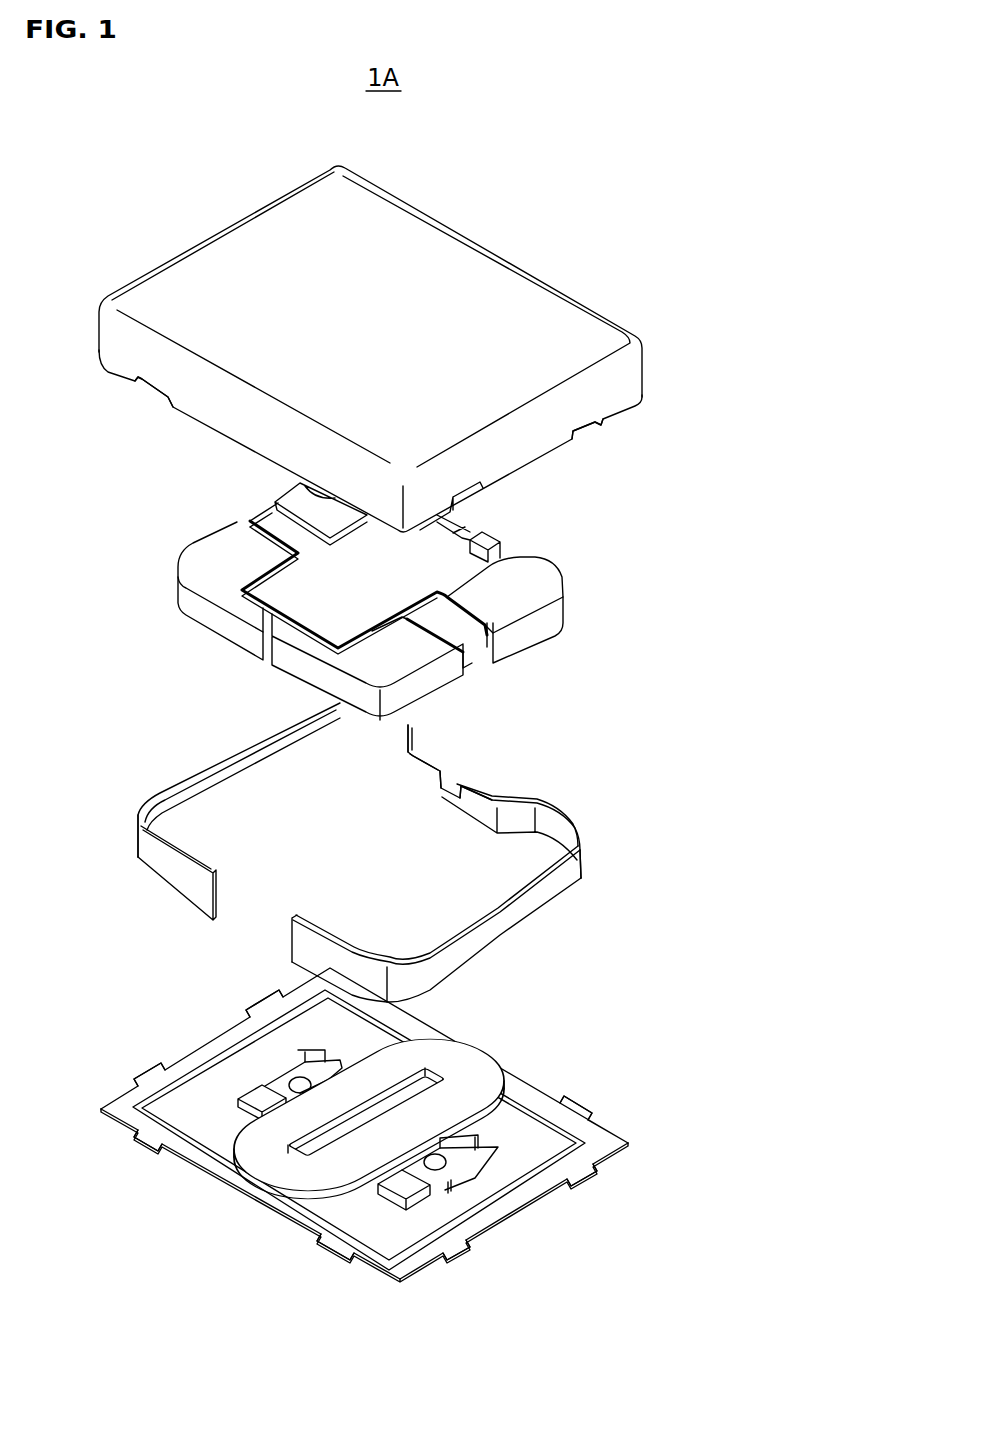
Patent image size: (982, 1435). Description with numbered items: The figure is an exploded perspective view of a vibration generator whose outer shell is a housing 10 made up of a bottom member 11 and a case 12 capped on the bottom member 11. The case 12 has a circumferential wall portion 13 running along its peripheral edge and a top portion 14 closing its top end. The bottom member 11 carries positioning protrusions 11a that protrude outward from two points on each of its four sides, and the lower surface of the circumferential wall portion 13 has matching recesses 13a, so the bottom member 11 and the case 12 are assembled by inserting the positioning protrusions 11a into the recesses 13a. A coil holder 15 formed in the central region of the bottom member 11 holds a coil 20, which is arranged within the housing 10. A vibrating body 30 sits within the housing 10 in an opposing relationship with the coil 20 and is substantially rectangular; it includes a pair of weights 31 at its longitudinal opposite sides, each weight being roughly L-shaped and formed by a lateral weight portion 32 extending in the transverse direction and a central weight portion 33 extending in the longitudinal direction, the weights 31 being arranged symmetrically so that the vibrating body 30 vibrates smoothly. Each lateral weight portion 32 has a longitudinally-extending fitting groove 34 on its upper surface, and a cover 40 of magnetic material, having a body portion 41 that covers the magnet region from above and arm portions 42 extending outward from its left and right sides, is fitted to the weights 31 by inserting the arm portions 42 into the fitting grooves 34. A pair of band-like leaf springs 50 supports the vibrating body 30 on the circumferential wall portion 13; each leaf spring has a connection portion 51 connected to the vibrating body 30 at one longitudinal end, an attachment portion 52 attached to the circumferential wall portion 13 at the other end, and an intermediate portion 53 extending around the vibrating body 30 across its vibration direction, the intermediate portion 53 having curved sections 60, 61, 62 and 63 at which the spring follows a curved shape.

The housing 10 is at (370, 708).
The bottom member 11 is at (508, 1222).
The positioning protrusions 11a is at (144, 1064).
The case 12 is at (430, 225).
The circumferential wall portion 13 is at (207, 418).
The recesses 13a is at (148, 388).
The top portion 14 is at (246, 257).
The coil holder 15 is at (490, 1143).
The coil 20 is at (263, 1170).
The vibrating body 30 is at (364, 606).
The weights 31 is at (350, 606).
The lateral weight portion 32 is at (220, 548).
The central weight portion 33 is at (227, 627).
The fitting groove 34 is at (218, 541).
The cover 40 is at (324, 595).
The body portion 41 is at (443, 566).
The arm portions 42 is at (255, 515).
The leaf springs 50 is at (363, 860).
The connection portion 51 is at (480, 790).
The attachment portion 52 is at (185, 887).
The intermediate portion 53 is at (240, 769).
The curved section 60 is at (410, 772).
The curved section 61 is at (413, 740).
The curved section 62 is at (349, 716).
The curved section 63 is at (140, 847).